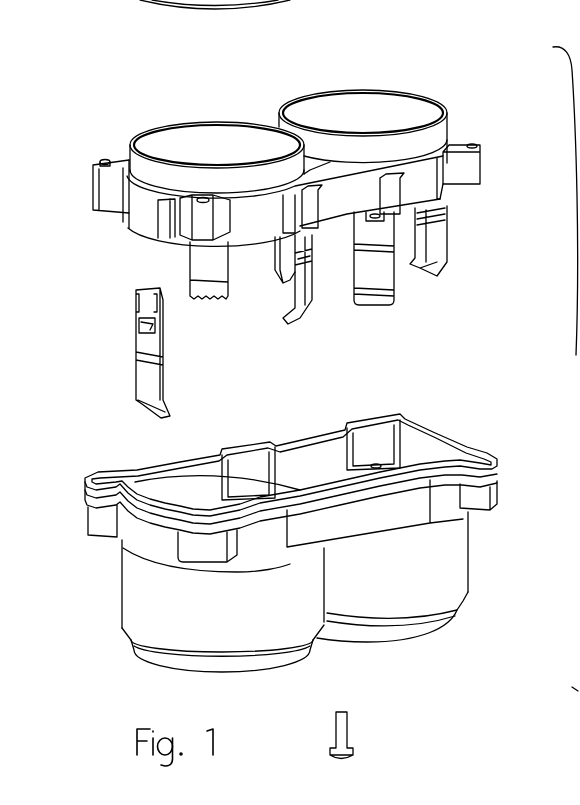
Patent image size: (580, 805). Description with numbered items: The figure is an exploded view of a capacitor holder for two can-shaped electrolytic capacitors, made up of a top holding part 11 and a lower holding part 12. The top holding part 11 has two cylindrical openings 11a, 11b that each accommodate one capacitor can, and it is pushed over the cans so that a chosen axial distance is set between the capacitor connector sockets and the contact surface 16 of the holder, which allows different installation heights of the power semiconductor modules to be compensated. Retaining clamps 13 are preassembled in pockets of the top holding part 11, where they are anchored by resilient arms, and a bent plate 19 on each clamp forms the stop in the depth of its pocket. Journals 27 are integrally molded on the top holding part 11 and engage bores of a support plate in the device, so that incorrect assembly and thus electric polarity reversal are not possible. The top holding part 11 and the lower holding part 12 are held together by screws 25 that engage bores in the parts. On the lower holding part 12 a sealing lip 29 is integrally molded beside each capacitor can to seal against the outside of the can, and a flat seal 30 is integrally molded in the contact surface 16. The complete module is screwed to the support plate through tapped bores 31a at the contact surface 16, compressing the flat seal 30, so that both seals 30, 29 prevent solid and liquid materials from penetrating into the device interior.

The top holding part 11 is at (450, 137).
The cylindrical opening 11a is at (382, 117).
The cylindrical opening 11b is at (240, 133).
The lower holding part 12 is at (440, 570).
The retaining clamp 13 is at (424, 233).
The contact surface 16 is at (316, 172).
The bent plate 19 is at (139, 327).
The screw 25 is at (342, 728).
The journal 27 is at (103, 158).
The sealing lip 29 is at (415, 628).
The flat seal 30 is at (457, 440).
The tapped bore 31a is at (204, 197).